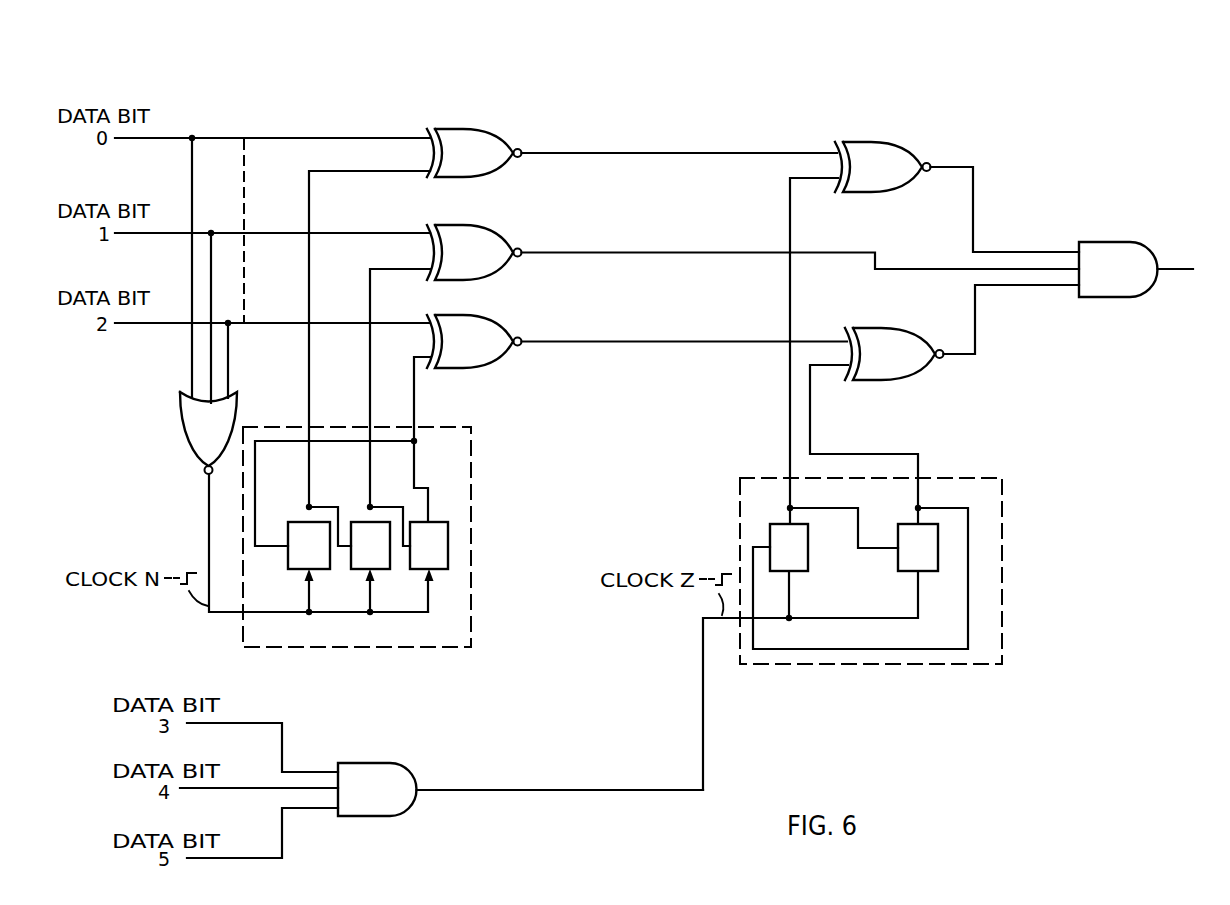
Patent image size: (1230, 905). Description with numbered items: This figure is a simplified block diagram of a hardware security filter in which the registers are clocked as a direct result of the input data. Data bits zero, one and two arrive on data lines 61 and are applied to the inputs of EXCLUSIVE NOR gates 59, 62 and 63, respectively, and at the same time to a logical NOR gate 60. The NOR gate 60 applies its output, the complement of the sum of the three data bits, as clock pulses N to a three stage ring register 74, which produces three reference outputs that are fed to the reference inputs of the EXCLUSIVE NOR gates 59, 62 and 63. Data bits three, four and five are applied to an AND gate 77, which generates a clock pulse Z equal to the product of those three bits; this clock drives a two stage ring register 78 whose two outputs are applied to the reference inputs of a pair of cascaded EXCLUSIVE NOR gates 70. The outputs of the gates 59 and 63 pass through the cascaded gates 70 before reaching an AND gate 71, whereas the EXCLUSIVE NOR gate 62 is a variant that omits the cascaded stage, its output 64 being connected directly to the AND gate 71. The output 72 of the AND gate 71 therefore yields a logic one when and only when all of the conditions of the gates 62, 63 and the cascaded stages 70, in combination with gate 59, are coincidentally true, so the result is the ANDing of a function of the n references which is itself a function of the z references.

The EXCLUSIVE NOR gate 59 is at (488, 132).
The NOR gate 60 is at (184, 449).
The data lines 61 is at (245, 195).
The EXCLUSIVE NOR gate 62 is at (497, 230).
The EXCLUSIVE NOR gate 63 is at (498, 320).
The output 64 is at (683, 252).
The EXCLUSIVE NOR gates 70 is at (900, 147).
The AND gate 71 is at (1130, 243).
The output 72 is at (1180, 263).
The three stage ring register 74 is at (472, 517).
The AND gate 77 is at (400, 764).
The two stage ring register 78 is at (1003, 587).